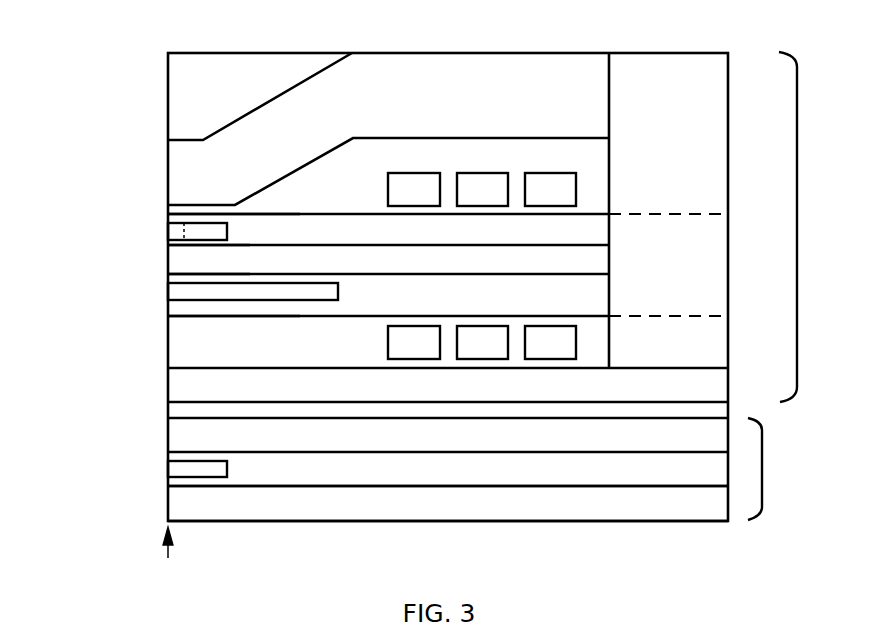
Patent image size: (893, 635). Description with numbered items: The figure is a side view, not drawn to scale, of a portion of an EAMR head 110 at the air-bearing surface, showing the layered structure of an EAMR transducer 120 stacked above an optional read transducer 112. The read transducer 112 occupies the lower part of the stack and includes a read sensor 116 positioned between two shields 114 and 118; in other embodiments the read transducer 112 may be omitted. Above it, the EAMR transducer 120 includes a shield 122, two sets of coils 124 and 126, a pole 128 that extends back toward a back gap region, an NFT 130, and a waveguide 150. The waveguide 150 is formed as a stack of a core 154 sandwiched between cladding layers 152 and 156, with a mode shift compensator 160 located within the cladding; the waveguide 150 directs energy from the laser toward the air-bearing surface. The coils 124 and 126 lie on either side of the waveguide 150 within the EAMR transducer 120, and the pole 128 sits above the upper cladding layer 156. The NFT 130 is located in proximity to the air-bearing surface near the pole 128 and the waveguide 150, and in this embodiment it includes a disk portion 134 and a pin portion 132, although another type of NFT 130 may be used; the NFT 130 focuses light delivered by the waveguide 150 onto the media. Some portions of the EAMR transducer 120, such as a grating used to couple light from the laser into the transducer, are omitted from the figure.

The EAMR head 110 is at (418, 30).
The read transducer 112 is at (762, 470).
The shield 114 is at (168, 517).
The read sensor 116 is at (205, 477).
The shield 118 is at (609, 452).
The EAMR transducer 120 is at (797, 228).
The shield 122 is at (168, 385).
The coils 124 is at (345, 342).
The coils 126 is at (592, 188).
The pole 128 is at (168, 201).
The NFT 130 is at (82, 230).
The pin portion 132 is at (168, 230).
The disk portion 134 is at (197, 223).
The waveguide 150 is at (90, 285).
The cladding layer 152 is at (609, 300).
The core 154 is at (609, 257).
The cladding layer 156 is at (609, 232).
The mode shift compensator 160 is at (168, 292).